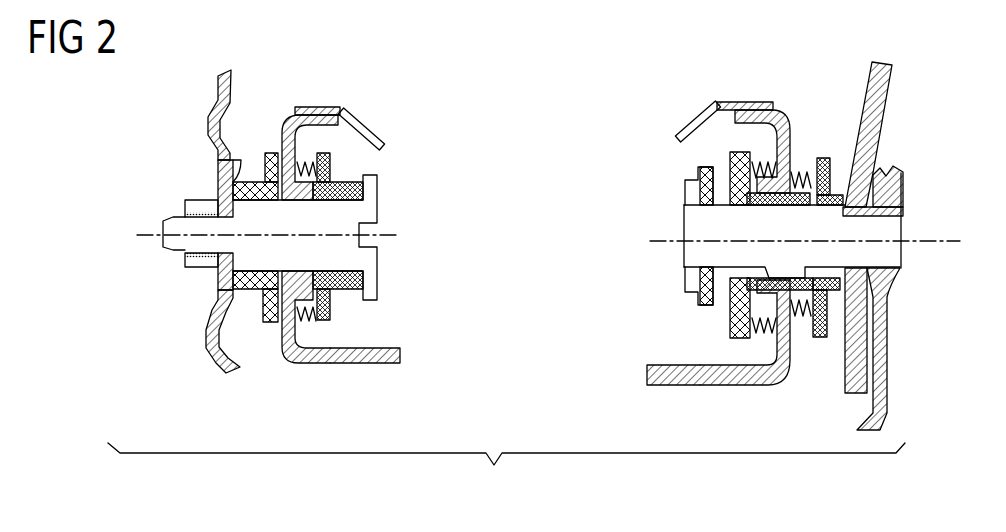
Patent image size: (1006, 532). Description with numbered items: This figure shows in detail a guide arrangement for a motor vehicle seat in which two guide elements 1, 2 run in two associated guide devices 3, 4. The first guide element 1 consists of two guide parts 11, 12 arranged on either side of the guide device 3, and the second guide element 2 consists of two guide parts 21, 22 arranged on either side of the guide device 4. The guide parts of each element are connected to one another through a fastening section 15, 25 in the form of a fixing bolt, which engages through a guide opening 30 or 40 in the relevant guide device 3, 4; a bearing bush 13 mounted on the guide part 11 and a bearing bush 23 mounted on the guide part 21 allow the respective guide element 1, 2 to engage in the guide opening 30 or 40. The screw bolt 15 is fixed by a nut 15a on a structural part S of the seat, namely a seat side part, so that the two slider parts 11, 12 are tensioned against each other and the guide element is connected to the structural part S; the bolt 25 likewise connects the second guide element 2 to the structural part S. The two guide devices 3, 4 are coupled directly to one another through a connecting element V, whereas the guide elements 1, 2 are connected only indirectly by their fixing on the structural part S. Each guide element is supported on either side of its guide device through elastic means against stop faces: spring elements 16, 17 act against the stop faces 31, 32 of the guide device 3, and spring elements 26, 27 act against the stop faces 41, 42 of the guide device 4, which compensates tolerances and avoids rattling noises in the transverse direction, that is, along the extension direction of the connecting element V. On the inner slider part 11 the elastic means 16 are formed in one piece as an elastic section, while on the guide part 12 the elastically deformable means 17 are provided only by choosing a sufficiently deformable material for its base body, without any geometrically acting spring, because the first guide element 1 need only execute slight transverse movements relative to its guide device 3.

The first guide element 1 is at (337, 147).
The second guide element 2 is at (873, 147).
The guide device 3 is at (318, 113).
The guide device 4 is at (777, 110).
The guide part 11 is at (343, 182).
The guide part 12 is at (213, 160).
The bearing bush 13 is at (293, 272).
The fastening section 15 is at (310, 245).
The nut 15a is at (186, 204).
The spring element 16 is at (340, 115).
The spring element 17 is at (270, 157).
The guide part 21 is at (730, 150).
The guide part 22 is at (850, 160).
The bearing bush 23 is at (807, 267).
The fastening section 25 is at (720, 222).
The spring element 26 is at (753, 157).
The spring element 27 is at (802, 160).
The guide opening 30 is at (297, 200).
The stop face 31 is at (295, 107).
The stop face 32 is at (282, 147).
The guide opening 40 is at (767, 267).
The stop face 41 is at (762, 102).
The stop face 42 is at (797, 160).
The structural part S is at (207, 125).
The connecting element V is at (363, 363).